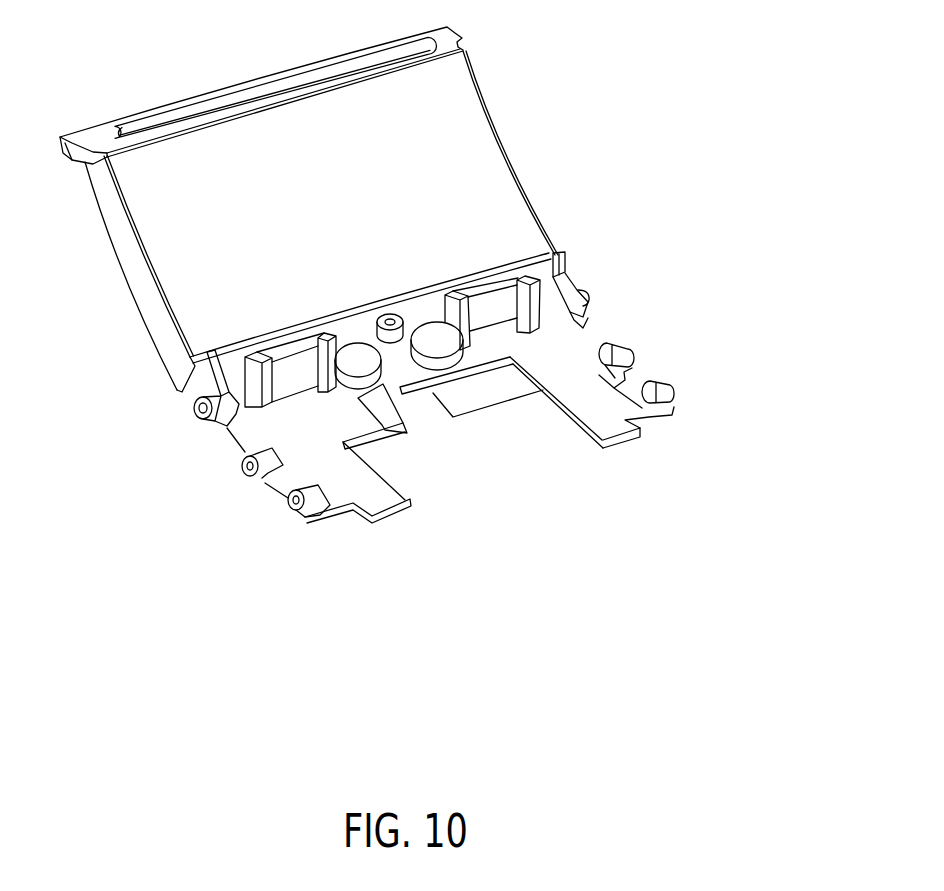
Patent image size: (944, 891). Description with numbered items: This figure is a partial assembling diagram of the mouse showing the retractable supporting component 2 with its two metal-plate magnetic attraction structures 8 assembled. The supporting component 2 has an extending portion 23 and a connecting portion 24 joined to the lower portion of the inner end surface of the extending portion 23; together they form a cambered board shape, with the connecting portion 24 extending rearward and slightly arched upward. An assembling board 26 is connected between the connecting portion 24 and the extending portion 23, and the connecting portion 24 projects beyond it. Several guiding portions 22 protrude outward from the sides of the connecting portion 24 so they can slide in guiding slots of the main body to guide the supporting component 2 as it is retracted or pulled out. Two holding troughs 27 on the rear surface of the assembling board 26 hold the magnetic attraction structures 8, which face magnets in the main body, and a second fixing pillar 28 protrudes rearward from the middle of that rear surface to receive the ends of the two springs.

The supporting component 2 is at (93, 163).
The magnetic attraction structure 8 is at (293, 370).
The guiding portion 22 is at (196, 412).
The extending portion 23 is at (505, 147).
The connecting portion 24 is at (578, 342).
The assembling board 26 is at (549, 280).
The holding trough 27 is at (506, 302).
The second fixing pillar 28 is at (395, 335).